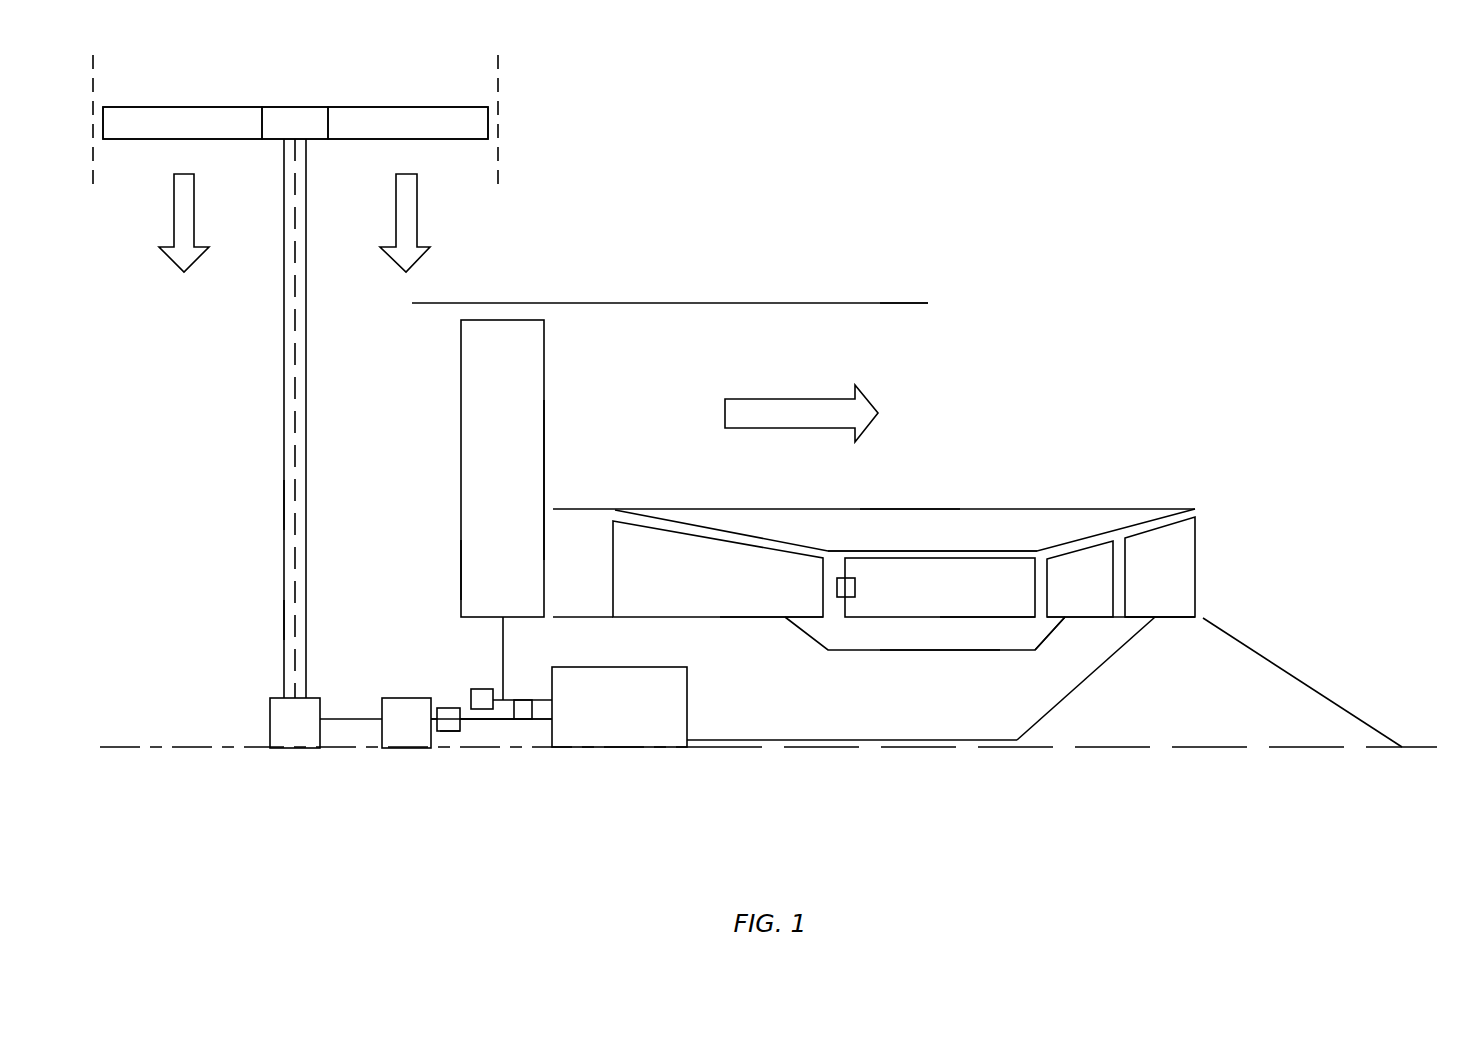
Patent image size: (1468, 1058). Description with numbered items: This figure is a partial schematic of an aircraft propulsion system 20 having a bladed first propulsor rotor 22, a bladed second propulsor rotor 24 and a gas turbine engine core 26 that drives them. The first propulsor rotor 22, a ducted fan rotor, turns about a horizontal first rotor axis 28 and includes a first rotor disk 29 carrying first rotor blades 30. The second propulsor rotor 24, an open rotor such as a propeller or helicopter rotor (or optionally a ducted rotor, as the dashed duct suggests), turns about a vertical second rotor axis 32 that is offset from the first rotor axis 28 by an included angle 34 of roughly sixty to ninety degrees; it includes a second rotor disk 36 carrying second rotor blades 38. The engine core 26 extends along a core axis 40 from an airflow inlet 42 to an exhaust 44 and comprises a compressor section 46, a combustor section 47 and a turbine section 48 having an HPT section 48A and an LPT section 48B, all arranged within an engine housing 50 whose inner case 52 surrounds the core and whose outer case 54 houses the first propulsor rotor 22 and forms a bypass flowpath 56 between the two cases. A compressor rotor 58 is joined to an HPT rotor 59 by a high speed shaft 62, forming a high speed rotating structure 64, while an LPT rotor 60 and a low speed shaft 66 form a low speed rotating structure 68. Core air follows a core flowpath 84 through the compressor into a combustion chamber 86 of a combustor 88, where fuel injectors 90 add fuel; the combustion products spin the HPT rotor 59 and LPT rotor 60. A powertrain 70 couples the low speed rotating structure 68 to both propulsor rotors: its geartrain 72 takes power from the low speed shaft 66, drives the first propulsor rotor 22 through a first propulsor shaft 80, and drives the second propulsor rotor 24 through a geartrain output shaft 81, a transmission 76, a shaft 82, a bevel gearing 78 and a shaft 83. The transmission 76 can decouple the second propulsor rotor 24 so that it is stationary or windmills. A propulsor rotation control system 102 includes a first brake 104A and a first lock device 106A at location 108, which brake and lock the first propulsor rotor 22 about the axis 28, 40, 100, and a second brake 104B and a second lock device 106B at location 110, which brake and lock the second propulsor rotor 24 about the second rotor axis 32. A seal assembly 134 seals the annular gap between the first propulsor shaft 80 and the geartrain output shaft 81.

The aircraft propulsion system 20 is at (1173, 166).
The first propulsor rotor 22 is at (445, 572).
The second propulsor rotor 24 is at (446, 100).
The gas turbine engine core 26 is at (1228, 462).
The first rotor axis 28 is at (779, 793).
The first rotor disk 29 is at (503, 647).
The first rotor blades 30 is at (461, 450).
The second rotor axis 32 is at (296, 382).
The included angle 34 is at (296, 614).
The second rotor disk 36 is at (296, 107).
The second rotor blades 38 is at (183, 107).
The core axis 40 is at (779, 793).
The airflow inlet 42 is at (557, 548).
The exhaust 44 is at (1213, 580).
The compressor section 46 is at (740, 540).
The combustor section 47 is at (963, 548).
The turbine section 48 is at (1023, 440).
The high pressure turbine section 48A is at (1078, 548).
The low pressure turbine section 48B is at (1153, 528).
The engine housing 50 is at (899, 268).
The inner case 52 is at (905, 506).
The outer case 54 is at (715, 302).
The bypass flowpath 56 is at (640, 388).
The compressor rotor 58 is at (770, 618).
The HPT rotor 59 is at (1085, 617).
The LPT rotor 60 is at (1173, 617).
The high speed shaft 62 is at (932, 650).
The high speed rotating structure 64 is at (822, 655).
The low speed shaft 66 is at (893, 740).
The low speed rotating structure 68 is at (998, 746).
The powertrain 70 is at (458, 797).
The geartrain 72 is at (608, 749).
The transmission 76 is at (394, 742).
The gearing 78 is at (283, 742).
The first propulsor shaft 80 is at (533, 700).
The geartrain output shaft 81 is at (505, 719).
The shaft 82 is at (348, 719).
The shaft 83 is at (286, 502).
The core flowpath 84 is at (596, 588).
The combustion chamber 86 is at (980, 604).
The combustor 88 is at (875, 558).
The fuel injector 90 is at (855, 588).
The axis 100 is at (1425, 753).
The propulsor rotation control system 102 is at (475, 746).
The first brake 104A is at (405, 670).
The second brake 104B is at (354, 789).
The first lock device 106A is at (405, 670).
The second lock device 106B is at (354, 789).
The location 108 is at (480, 688).
The location 110 is at (450, 731).
The seal assembly 134 is at (523, 719).